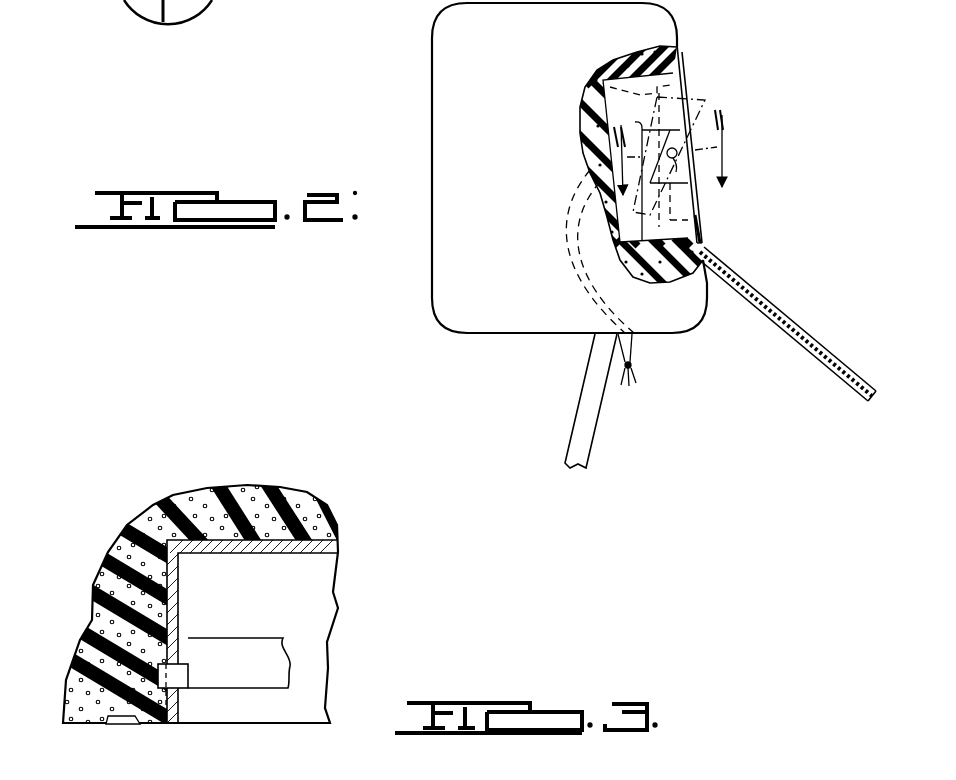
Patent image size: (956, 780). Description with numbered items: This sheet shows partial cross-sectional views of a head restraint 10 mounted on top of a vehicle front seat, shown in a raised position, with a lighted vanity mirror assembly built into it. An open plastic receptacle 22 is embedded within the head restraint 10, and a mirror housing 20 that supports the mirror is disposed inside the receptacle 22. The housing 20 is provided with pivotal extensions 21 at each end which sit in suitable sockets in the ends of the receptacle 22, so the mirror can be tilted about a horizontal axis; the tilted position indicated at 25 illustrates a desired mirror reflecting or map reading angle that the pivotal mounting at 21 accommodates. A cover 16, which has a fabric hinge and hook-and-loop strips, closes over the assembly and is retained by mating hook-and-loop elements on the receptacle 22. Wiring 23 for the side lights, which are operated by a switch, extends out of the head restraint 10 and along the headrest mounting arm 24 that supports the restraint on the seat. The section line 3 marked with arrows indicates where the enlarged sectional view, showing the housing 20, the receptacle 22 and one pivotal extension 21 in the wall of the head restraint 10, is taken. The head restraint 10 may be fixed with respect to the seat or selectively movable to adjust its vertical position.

In FIG. 2, the head restraint 10 is at (394, 115).
In FIG. 3, the head restraint 10 is at (86, 527).
In FIG. 2, the mirror housing 20 is at (600, 63).
In FIG. 3, the mirror housing 20 is at (278, 648).
In FIG. 2, the open plastic receptacle 22 is at (603, 80).
In FIG. 3, the open plastic receptacle 22 is at (281, 540).
In FIG. 2, the tilted mirror angle 25 is at (706, 98).
In FIG. 2, the section line 3- 3 is at (622, 177).
In FIG. 2, the pivotal extensions 21 is at (679, 181).
In FIG. 3, the pivotal extensions 21 is at (178, 677).
In FIG. 2, the cover 16 is at (786, 320).
In FIG. 2, the wiring 23 is at (633, 362).
In FIG. 2, the headrest mounting arm 24 is at (589, 439).